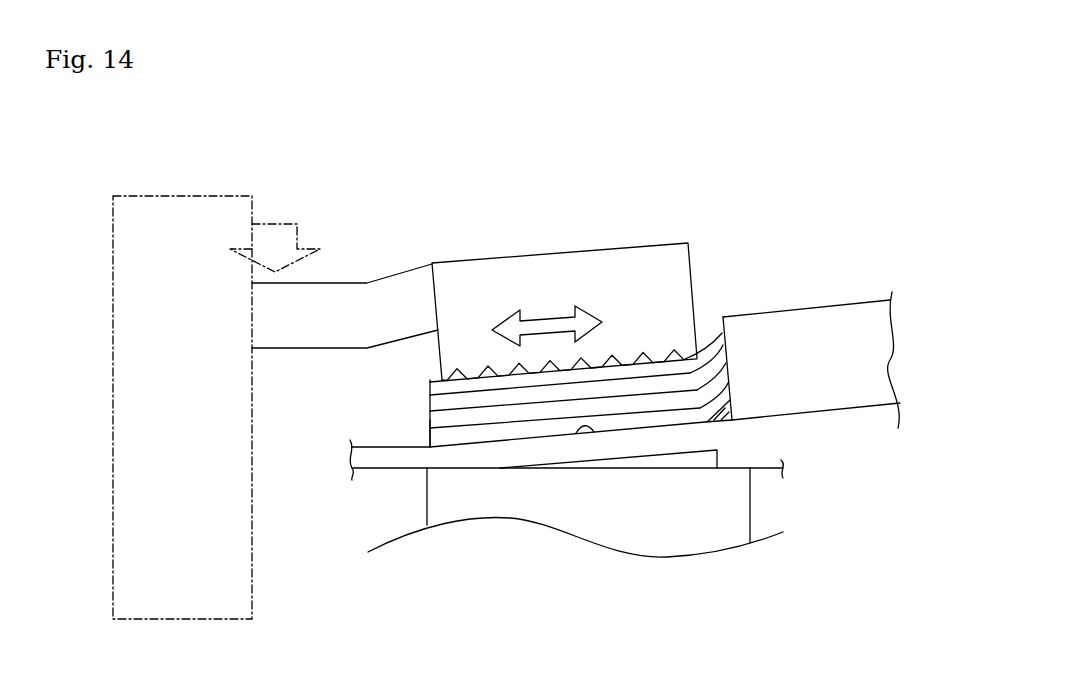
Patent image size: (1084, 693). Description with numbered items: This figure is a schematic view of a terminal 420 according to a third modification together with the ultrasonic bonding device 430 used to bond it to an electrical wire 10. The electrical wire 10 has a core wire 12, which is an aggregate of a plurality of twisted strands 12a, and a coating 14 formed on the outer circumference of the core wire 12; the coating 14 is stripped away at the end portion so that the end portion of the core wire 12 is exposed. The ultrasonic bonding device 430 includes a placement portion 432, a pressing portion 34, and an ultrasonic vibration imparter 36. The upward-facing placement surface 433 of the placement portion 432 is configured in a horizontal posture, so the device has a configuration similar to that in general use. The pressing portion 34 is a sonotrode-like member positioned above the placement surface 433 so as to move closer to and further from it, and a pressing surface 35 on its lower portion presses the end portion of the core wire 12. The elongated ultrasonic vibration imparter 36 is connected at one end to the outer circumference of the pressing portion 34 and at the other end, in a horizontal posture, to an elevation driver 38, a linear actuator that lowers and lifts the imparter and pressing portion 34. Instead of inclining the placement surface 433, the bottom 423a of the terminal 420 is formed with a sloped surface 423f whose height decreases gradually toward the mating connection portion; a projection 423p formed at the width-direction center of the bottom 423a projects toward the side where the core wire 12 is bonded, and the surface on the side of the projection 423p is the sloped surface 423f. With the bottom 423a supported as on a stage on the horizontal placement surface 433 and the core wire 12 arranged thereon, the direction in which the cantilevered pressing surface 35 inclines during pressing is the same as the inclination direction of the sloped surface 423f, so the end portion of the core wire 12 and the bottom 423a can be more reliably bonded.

The elevation driver 38 is at (229, 196).
The ultrasonic vibration imparter 36 is at (372, 283).
The pressing portion 34 is at (694, 262).
The pressing surface 35 is at (641, 358).
The core wire 12 is at (428, 380).
The strand 12a is at (430, 436).
The projection 423p is at (732, 400).
The electrical wire 10 is at (843, 308).
The coating 14 is at (883, 378).
The ultrasonic bonding device 430 is at (720, 200).
The terminal 420 is at (383, 446).
The placement surface 433 is at (678, 454).
The placement portion 432 is at (752, 508).
The bottom 423a is at (463, 468).
The sloped surface 423f is at (578, 433).